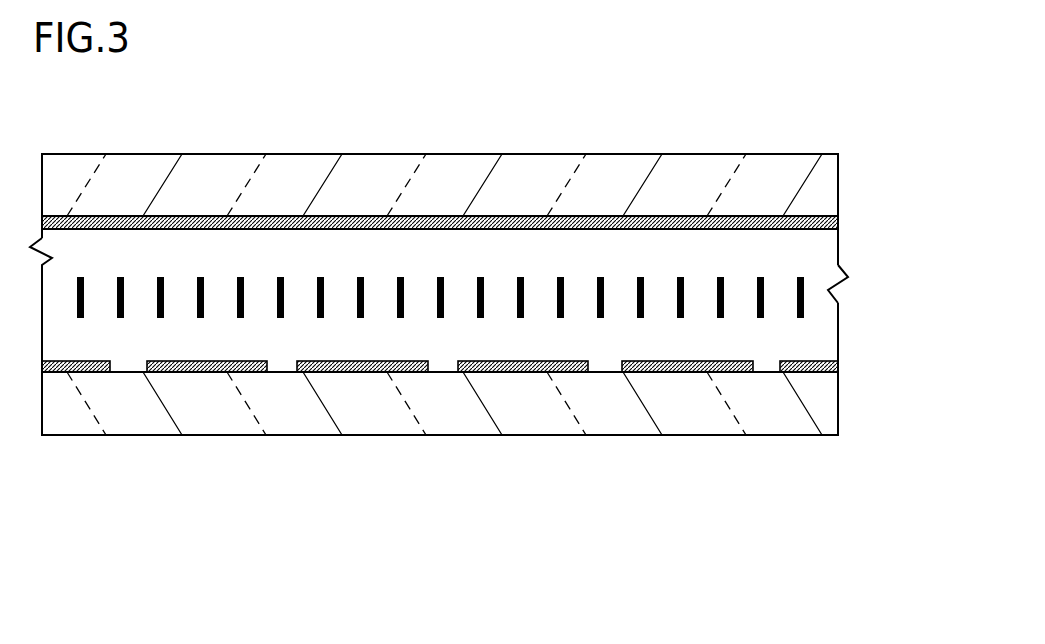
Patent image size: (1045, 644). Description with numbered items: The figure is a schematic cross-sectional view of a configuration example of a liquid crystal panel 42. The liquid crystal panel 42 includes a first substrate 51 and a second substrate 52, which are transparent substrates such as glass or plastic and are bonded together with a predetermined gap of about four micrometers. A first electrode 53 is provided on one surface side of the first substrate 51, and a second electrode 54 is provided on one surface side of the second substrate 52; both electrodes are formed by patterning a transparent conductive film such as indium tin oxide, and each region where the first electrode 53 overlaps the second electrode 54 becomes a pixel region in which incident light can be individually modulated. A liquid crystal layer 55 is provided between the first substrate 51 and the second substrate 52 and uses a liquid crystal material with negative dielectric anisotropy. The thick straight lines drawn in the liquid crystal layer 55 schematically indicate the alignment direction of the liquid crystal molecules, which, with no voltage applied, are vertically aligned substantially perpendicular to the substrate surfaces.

The liquid crystal panel 42 is at (488, 374).
The first substrate 51 is at (832, 182).
The second substrate 52 is at (833, 410).
The first electrode 53 is at (838, 220).
The second electrode 54 is at (78, 372).
The liquid crystal layer 55 is at (832, 303).